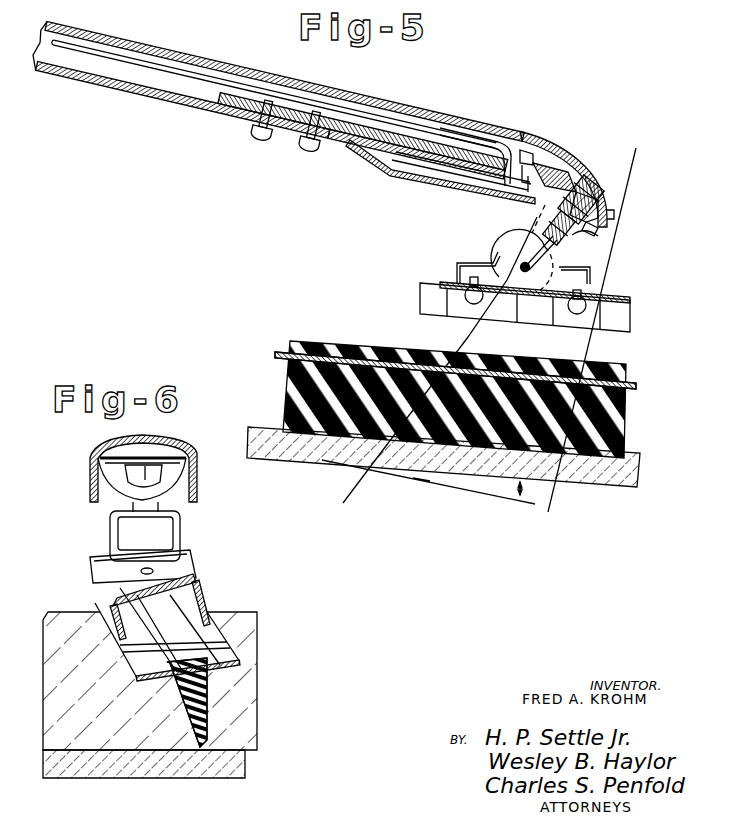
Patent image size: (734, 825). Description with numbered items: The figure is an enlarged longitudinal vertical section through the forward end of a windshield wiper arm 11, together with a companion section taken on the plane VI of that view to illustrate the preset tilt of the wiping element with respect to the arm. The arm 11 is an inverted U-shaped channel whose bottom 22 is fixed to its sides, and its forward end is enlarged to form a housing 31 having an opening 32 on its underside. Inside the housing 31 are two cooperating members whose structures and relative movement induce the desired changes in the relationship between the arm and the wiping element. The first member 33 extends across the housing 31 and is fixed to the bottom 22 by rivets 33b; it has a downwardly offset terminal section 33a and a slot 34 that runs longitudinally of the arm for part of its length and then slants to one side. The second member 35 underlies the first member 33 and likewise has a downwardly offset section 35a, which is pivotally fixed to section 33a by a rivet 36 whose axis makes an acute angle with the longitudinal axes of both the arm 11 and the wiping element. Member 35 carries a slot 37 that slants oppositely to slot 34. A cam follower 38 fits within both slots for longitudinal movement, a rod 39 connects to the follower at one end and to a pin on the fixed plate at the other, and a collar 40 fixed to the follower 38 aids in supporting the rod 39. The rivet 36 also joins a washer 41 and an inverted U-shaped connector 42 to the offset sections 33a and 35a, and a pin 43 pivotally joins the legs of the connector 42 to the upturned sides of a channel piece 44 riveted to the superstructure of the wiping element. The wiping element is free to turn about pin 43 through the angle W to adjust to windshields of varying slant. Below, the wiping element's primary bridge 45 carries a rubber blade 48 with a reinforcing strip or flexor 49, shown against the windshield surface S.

In FIG. 5, the arm 11 is at (386, 94).
In FIG. 5, the bottom 22 is at (168, 98).
In FIG. 5, the housing 31 is at (570, 136).
In FIG. 6, the housing 31 is at (88, 456).
In FIG. 5, the opening 32 is at (603, 228).
In FIG. 5, the first member 33 is at (422, 132).
In FIG. 5, the offset terminal section 33a is at (614, 214).
In FIG. 6, the offset terminal section 33a is at (180, 492).
In FIG. 5, the rivets 33b is at (307, 147).
In FIG. 5, the slot 34 is at (548, 158).
In FIG. 5, the second member 35 is at (378, 162).
In FIG. 5, the offset section 35a is at (596, 238).
In FIG. 6, the offset section 35a is at (172, 506).
In FIG. 5, the rivet 36 is at (582, 182).
In FIG. 6, the rivet 36 is at (92, 492).
In FIG. 5, the slot 37 is at (436, 166).
In FIG. 5, the cam follower 38 is at (520, 160).
In FIG. 5, the rod 39 is at (190, 75).
In FIG. 6, the rod 39 is at (148, 447).
In FIG. 5, the collar 40 is at (468, 128).
In FIG. 5, the washer 41 is at (584, 230).
In FIG. 6, the washer 41 is at (112, 514).
In FIG. 5, the connector 42 is at (537, 214).
In FIG. 6, the connector 42 is at (113, 538).
In FIG. 5, the pin 43 is at (519, 256).
In FIG. 6, the pin 43 is at (147, 553).
In FIG. 5, the channel piece 44 is at (493, 268).
In FIG. 6, the channel piece 44 is at (197, 570).
In FIG. 5, the primary bridge 45 is at (630, 317).
In FIG. 6, the primary bridge 45 is at (207, 596).
In FIG. 5, the rubber blade 48 is at (624, 402).
In FIG. 6, the rubber blade 48 is at (212, 700).
In FIG. 5, the reinforcing strip 49 is at (636, 380).
In FIG. 6, the reinforcing strip 49 is at (215, 632).
In FIG. 5, the surface S is at (640, 462).
In FIG. 6, the surface S is at (180, 768).
In FIG. 5, the angle W is at (428, 482).
In FIG. 5, the section plane VI— VI is at (638, 161).